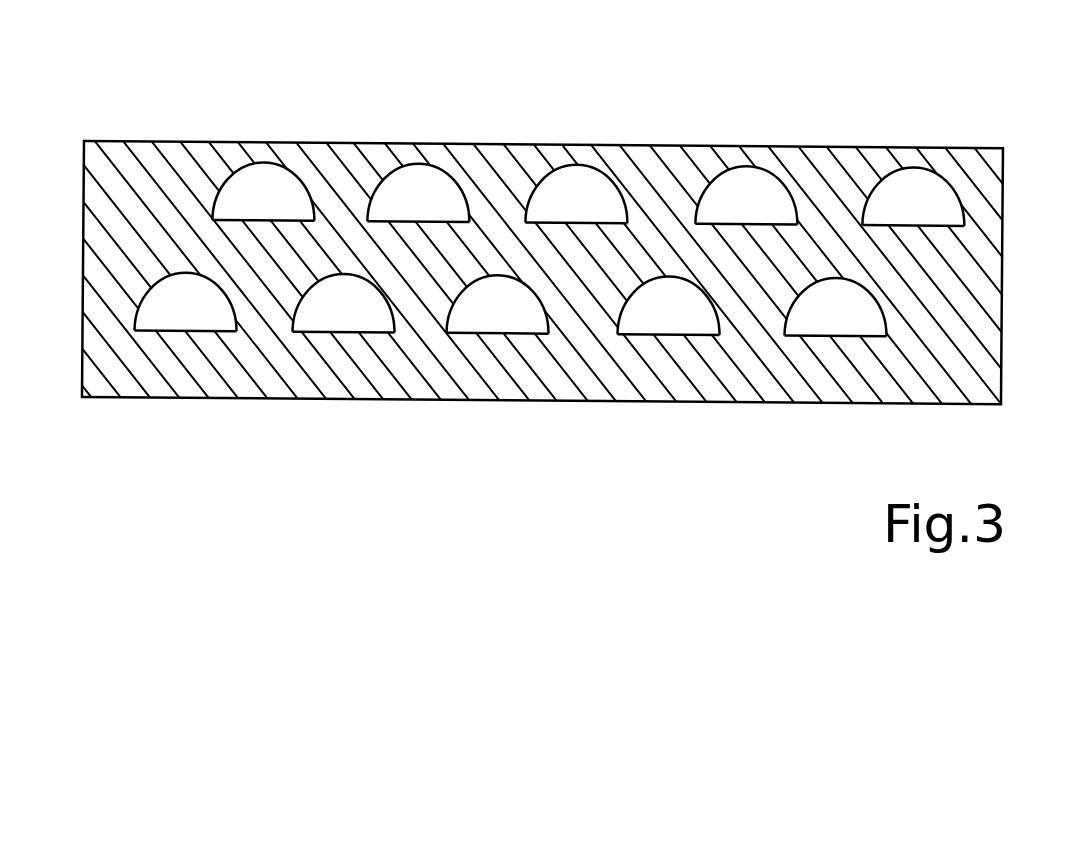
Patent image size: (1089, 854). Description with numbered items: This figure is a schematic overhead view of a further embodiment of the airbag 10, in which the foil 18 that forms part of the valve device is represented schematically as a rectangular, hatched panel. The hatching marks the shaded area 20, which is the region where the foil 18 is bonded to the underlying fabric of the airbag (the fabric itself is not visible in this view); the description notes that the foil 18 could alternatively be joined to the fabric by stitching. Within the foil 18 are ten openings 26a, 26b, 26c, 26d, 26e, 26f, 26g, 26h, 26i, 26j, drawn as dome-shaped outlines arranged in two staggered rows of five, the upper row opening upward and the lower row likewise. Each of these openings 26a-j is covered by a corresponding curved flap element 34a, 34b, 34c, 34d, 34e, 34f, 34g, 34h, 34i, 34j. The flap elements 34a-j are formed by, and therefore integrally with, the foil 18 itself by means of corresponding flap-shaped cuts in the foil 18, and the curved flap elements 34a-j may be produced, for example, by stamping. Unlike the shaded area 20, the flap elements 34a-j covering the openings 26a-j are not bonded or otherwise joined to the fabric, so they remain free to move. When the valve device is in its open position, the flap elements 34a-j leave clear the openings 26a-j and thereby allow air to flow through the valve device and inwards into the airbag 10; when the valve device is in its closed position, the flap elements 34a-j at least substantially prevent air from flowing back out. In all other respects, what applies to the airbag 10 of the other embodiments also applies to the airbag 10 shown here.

The airbag 10 is at (807, 513).
The foil 18 is at (992, 313).
The shaded area 20 is at (992, 376).
The opening 26a is at (293, 131).
The opening 26b is at (452, 131).
The opening 26c is at (609, 132).
The opening 26d is at (777, 133).
The opening 26e is at (948, 136).
The opening 26f is at (170, 371).
The opening 26g is at (330, 373).
The opening 26h is at (487, 373).
The opening 26i is at (653, 375).
The opening 26j is at (822, 377).
The flap element 34a is at (243, 183).
The flap element 34b is at (398, 184).
The flap element 34c is at (556, 185).
The flap element 34d is at (726, 187).
The flap element 34e is at (893, 188).
The flap element 34f is at (170, 312).
The flap element 34g is at (328, 313).
The flap element 34h is at (482, 314).
The flap element 34i is at (653, 316).
The flap element 34j is at (820, 317).